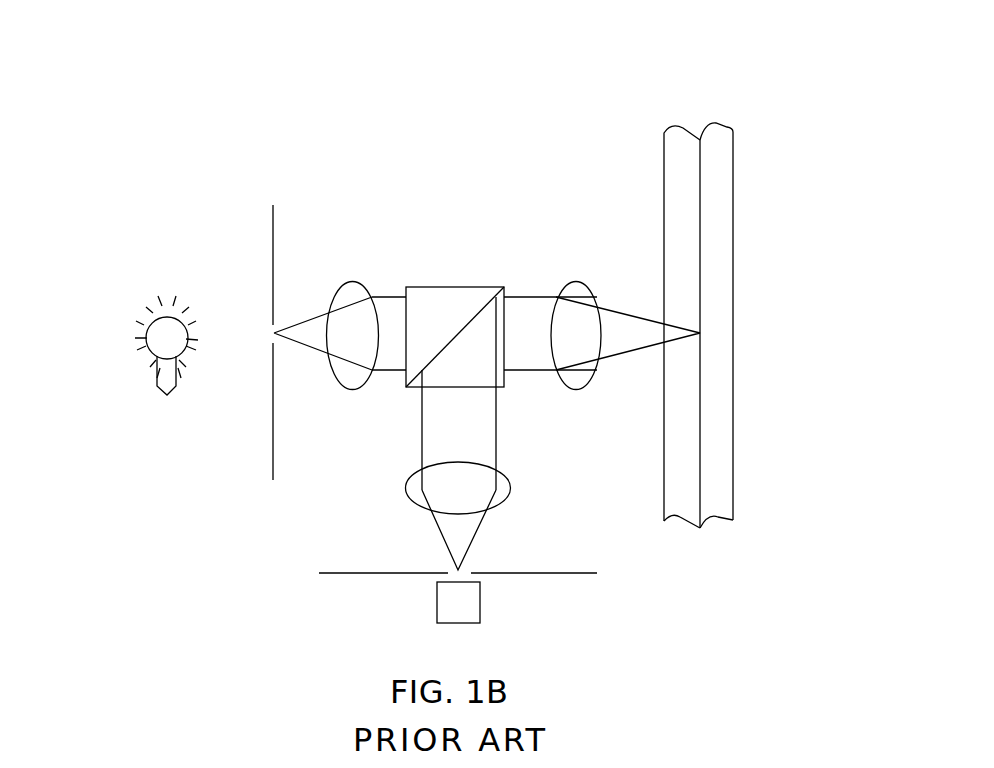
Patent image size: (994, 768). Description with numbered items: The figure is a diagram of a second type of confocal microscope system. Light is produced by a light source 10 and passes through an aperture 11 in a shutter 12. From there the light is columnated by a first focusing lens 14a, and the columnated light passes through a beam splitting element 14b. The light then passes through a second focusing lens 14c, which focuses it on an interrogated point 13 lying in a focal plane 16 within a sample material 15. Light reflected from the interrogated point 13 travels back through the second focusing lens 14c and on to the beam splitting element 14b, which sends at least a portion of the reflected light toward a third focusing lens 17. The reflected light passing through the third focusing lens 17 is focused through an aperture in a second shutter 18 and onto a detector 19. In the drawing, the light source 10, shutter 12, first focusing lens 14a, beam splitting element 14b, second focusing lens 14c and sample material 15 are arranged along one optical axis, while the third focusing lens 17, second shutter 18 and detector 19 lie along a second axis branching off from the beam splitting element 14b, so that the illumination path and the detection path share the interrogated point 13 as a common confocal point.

The light source 10 is at (167, 330).
The aperture 11 is at (266, 347).
The shutter 12 is at (272, 240).
The interrogated point 13 is at (703, 333).
The first focusing lens 14a is at (357, 297).
The beam splitting element 14b is at (457, 286).
The second focusing lens 14c is at (583, 296).
The sample material 15 is at (683, 180).
The focal plane 16 is at (700, 182).
The third focusing lens 17 is at (502, 502).
The second shutter 18 is at (345, 572).
The detector 19 is at (462, 603).